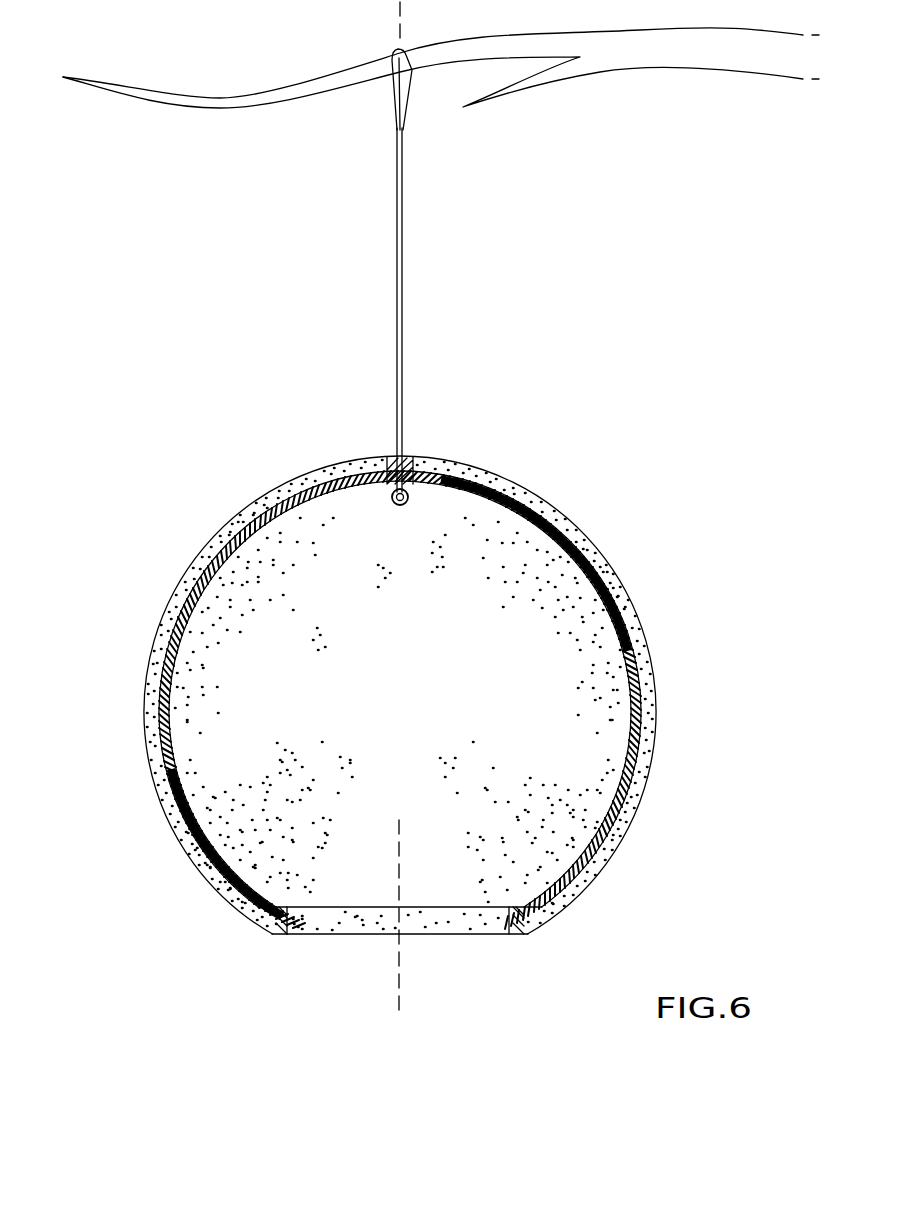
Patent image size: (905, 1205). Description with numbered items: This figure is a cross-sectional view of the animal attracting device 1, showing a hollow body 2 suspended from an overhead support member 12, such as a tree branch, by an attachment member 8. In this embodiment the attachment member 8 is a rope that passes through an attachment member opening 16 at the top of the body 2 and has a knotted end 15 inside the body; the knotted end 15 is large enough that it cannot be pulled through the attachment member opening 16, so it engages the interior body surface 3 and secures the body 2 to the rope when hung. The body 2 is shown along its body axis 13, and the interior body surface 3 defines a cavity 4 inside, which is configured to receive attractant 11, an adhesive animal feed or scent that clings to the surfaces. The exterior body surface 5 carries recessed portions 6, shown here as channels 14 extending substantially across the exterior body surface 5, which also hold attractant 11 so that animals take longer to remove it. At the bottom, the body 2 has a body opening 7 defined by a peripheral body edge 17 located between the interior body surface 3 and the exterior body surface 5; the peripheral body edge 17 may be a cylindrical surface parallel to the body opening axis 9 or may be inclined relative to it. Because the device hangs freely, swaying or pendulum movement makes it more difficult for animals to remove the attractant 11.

The animal attracting device 1 is at (222, 452).
The body 2 is at (655, 762).
The interior body surface 3 is at (179, 641).
The cavity 4 is at (348, 872).
The exterior body surface 5 is at (579, 523).
The recessed portion 6 is at (171, 632).
The body opening 7 is at (450, 945).
The attachment member 8 is at (403, 311).
The body opening axis 9 is at (398, 988).
The attractant 11 is at (208, 550).
The support member 12 is at (670, 63).
The body axis 13 is at (400, 22).
The channel 14 is at (151, 693).
The knotted end 15 is at (397, 505).
The attachment member opening 16 is at (420, 458).
The peripheral body edge 17 is at (482, 931).